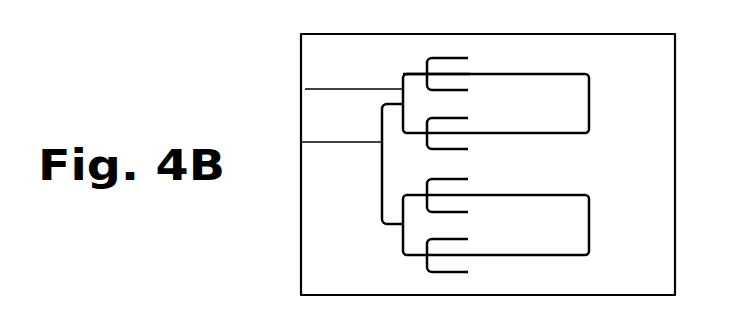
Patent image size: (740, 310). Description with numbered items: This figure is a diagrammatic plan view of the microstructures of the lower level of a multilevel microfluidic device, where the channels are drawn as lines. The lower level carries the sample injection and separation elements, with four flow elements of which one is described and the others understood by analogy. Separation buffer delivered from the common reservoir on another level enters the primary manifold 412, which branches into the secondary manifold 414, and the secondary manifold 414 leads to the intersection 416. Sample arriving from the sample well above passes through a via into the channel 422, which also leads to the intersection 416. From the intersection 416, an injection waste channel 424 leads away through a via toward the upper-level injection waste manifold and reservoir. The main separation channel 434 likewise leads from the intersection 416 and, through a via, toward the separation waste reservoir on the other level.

The primary manifold 412 is at (300, 142).
The secondary manifold 414 is at (305, 89).
The intersection 416 is at (428, 72).
The channel 422 is at (460, 88).
The injection waste channel 424 is at (440, 57).
The main separation channel 434 is at (565, 73).